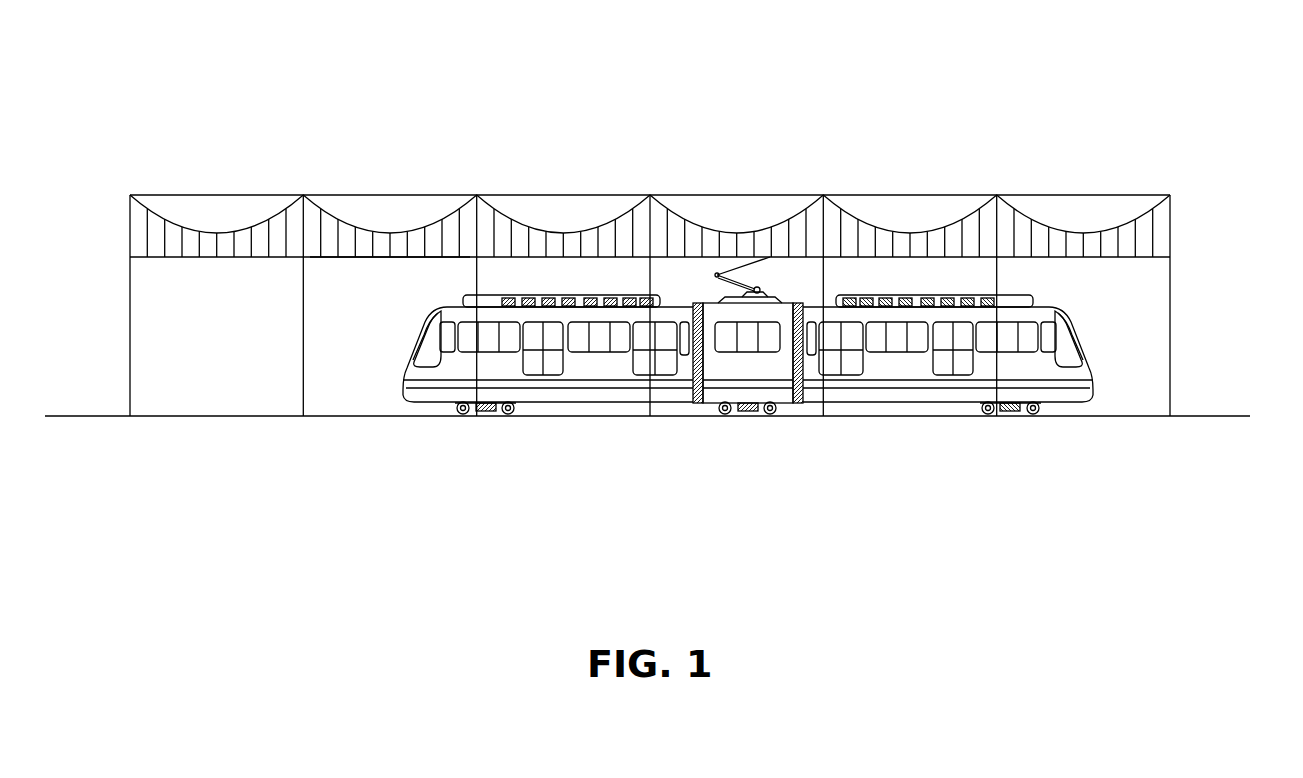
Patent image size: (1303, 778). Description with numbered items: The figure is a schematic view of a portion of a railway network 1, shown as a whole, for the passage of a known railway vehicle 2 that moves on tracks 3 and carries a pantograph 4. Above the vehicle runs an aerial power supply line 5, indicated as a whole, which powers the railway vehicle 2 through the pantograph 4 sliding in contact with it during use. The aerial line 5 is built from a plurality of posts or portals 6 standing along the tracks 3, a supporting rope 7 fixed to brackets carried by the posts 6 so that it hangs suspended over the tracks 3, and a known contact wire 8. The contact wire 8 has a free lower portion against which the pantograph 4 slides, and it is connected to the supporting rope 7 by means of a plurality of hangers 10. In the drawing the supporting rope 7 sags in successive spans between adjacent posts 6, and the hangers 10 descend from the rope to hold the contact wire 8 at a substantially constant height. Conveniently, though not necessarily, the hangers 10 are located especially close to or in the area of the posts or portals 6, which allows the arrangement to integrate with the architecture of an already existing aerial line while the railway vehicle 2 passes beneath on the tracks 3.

The portion of a railway network 1 is at (694, 226).
The railway vehicle 2 is at (748, 371).
The tracks 3 is at (1240, 415).
The pantograph 4 is at (715, 282).
The aerial power supply line 5 is at (1190, 226).
The posts or portals 6 is at (301, 326).
The supporting rope 7 is at (368, 236).
The contact wire 8 is at (377, 265).
The hangers 10 is at (1048, 240).